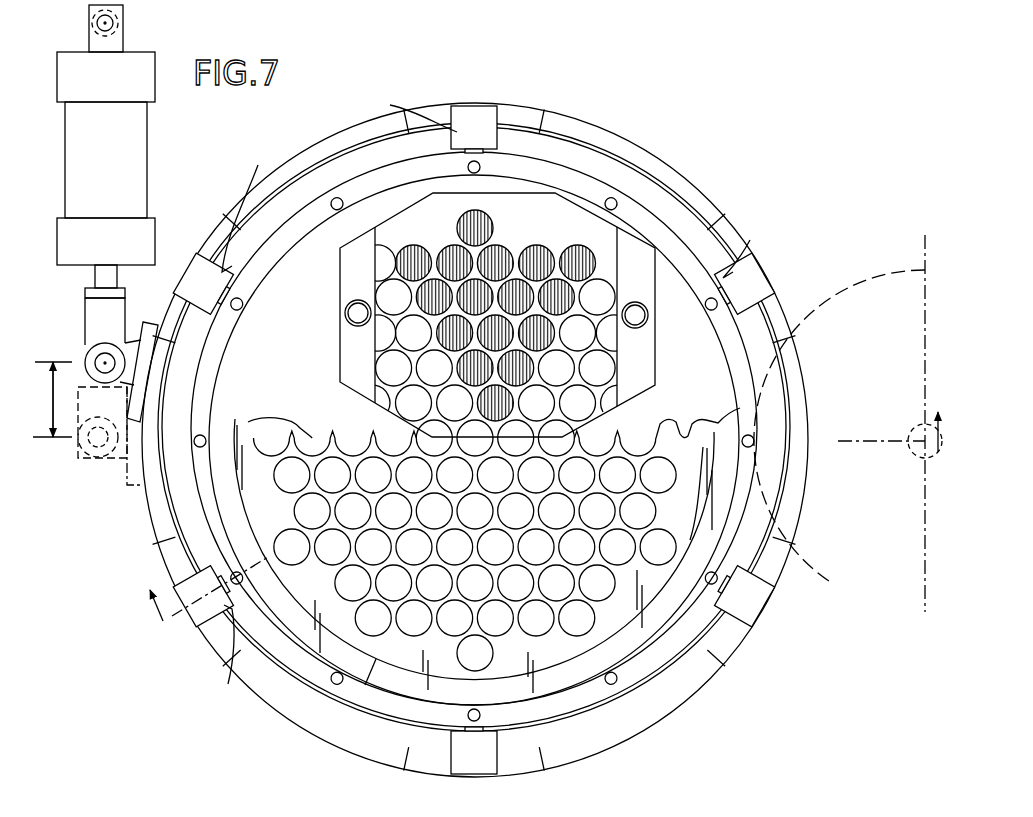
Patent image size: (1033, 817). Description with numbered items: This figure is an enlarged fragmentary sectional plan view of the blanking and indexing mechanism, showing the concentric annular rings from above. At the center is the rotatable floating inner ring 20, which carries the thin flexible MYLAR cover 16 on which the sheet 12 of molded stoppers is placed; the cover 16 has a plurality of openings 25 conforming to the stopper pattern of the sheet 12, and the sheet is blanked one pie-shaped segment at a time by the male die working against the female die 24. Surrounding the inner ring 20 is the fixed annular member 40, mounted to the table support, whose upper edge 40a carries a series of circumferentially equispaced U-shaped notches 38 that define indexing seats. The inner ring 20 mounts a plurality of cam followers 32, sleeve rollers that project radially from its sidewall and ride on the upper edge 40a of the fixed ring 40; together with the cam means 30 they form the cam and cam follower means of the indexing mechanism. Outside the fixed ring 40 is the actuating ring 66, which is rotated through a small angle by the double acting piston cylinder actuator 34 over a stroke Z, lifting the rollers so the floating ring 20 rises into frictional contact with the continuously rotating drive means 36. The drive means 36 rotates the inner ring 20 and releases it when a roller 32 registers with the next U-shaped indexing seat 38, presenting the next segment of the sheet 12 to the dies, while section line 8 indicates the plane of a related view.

The section line 8- 8 is at (547, 526).
The sheet 12 is at (343, 708).
The thin flexible cover 16 is at (250, 423).
The floating inner ring 20 is at (707, 213).
The female die 24 is at (376, 347).
The openings 25 is at (620, 469).
The cam means 30 is at (216, 242).
The cam followers 32 is at (470, 106).
The piston cylinder actuator 34 is at (140, 152).
The continuously rotating drive means 36 is at (863, 288).
The U-shaped notches 38 is at (489, 393).
The fixed annular member 40 is at (668, 171).
The upper edge 40a is at (627, 707).
The actuating ring 66 is at (632, 130).
The stroke dimension Z is at (42, 410).